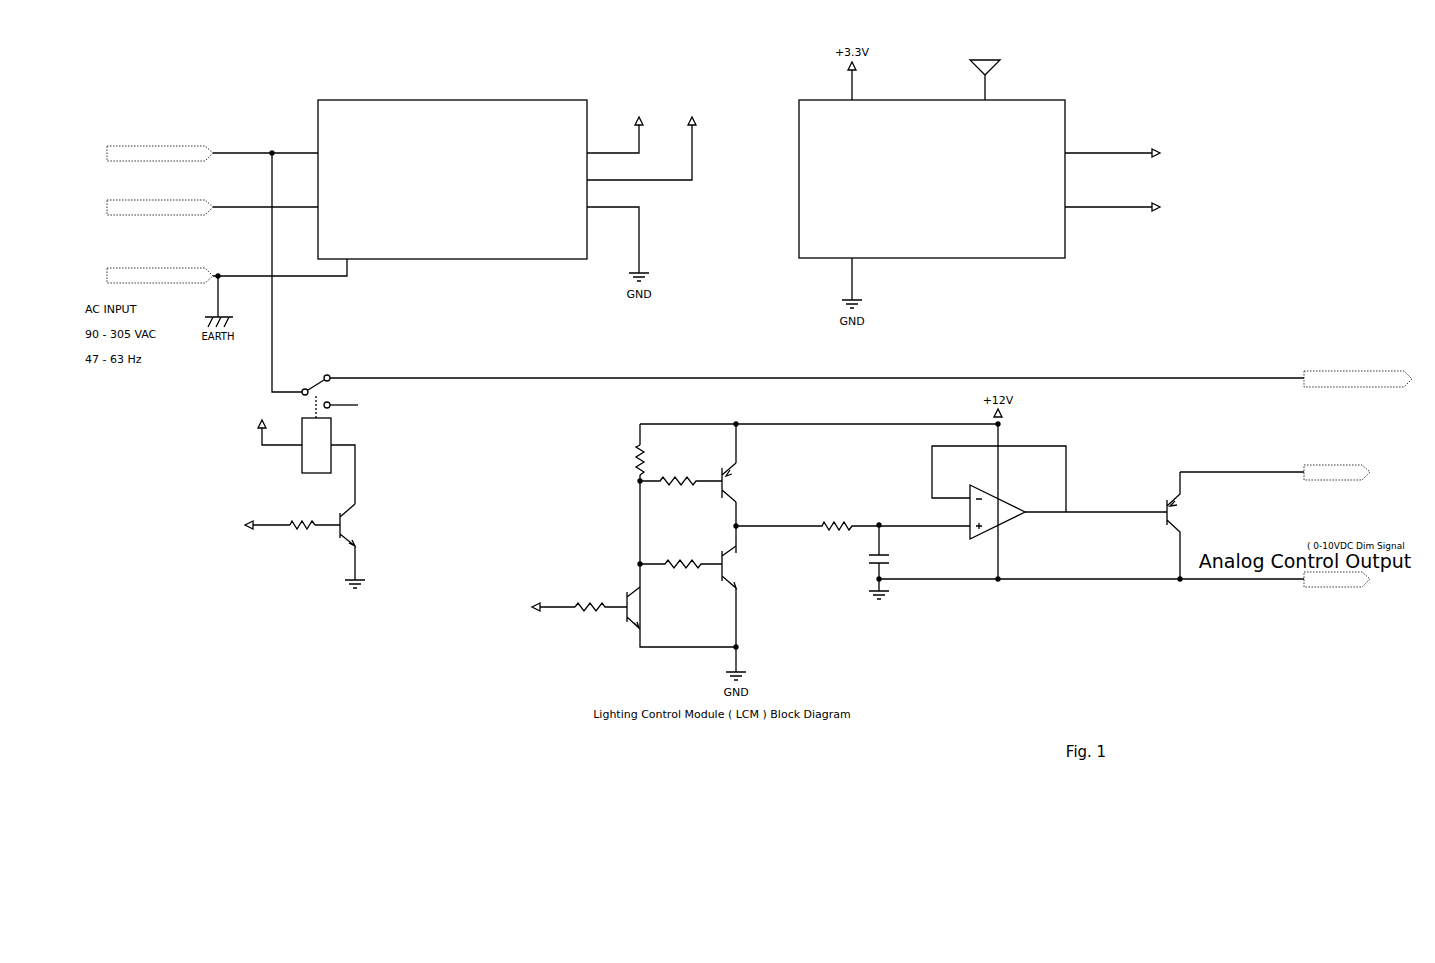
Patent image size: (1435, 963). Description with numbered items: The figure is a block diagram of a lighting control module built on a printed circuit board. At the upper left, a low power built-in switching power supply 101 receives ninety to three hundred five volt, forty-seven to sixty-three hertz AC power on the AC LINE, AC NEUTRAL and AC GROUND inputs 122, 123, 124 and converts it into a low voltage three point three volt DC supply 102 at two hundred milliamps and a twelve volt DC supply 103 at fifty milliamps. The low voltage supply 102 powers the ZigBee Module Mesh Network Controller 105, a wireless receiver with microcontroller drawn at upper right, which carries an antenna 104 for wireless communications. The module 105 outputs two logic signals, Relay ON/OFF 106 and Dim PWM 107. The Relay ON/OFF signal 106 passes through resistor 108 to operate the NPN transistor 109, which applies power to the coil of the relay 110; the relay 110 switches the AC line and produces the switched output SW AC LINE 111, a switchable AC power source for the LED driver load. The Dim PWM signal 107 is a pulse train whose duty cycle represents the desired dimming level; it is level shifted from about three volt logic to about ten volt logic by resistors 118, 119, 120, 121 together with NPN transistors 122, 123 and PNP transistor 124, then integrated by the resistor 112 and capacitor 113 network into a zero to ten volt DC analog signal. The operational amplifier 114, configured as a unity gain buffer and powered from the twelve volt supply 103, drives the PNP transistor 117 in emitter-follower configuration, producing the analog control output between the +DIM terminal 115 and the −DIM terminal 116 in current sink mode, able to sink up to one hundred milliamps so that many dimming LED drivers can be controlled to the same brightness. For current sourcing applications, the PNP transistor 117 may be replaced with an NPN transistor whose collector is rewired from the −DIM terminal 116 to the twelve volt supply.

The switching power supply 101 is at (500, 95).
The 3.3 VDC supply 102 is at (708, 97).
The 12 VDC supply 103 is at (655, 92).
The antenna 104 is at (1010, 38).
The ZigBee Module Mesh Network Controller 105 is at (967, 190).
The Relay ON/OFF signal 106 is at (1185, 138).
The Dim PWM signal 107 is at (1175, 215).
The resistor 108 is at (298, 508).
The NPN transistor 109 is at (398, 516).
The relay 110 is at (398, 425).
The SW AC LINE output 111 is at (1353, 363).
The resistor 112 is at (839, 498).
The capacitor 113 is at (844, 582).
The operational amplifier 114 is at (1082, 537).
The +DIM output 115 is at (1340, 461).
The -DIM output 116 is at (1334, 589).
The PNP transistor 117 is at (1158, 483).
The resistor 118 is at (583, 576).
The resistor 119 is at (605, 462).
The resistor 120 is at (674, 457).
The resistor 121 is at (673, 541).
The AC LINE input / NPN transistor 122 is at (167, 128).
The AC NEUTRAL input / NPN transistor 123 is at (150, 198).
The AC GROUND input / PNP transistor 124 is at (152, 268).